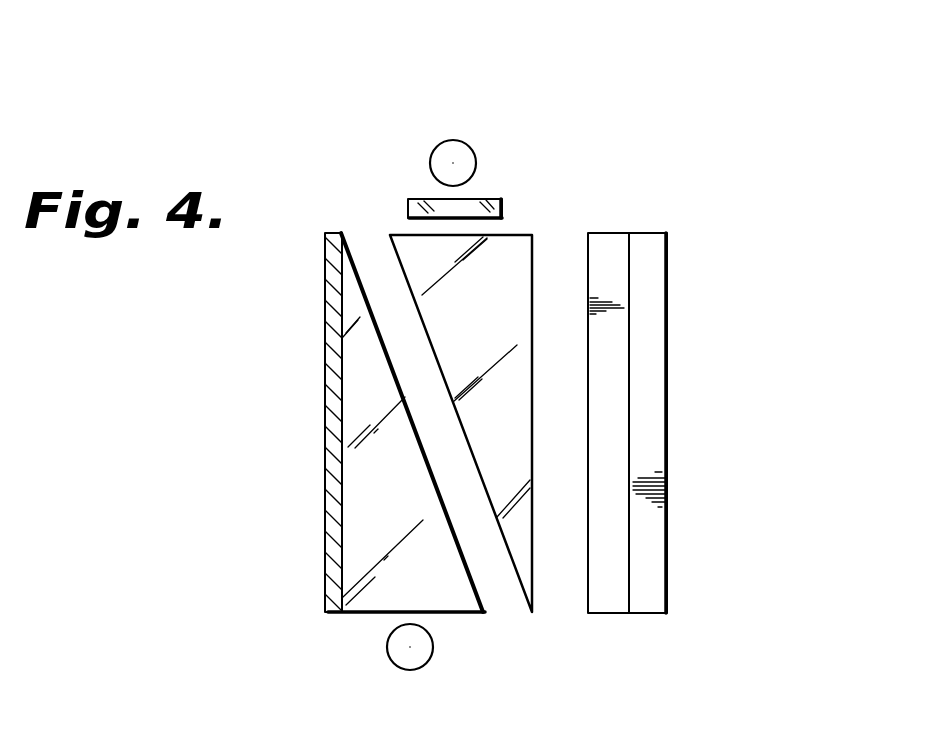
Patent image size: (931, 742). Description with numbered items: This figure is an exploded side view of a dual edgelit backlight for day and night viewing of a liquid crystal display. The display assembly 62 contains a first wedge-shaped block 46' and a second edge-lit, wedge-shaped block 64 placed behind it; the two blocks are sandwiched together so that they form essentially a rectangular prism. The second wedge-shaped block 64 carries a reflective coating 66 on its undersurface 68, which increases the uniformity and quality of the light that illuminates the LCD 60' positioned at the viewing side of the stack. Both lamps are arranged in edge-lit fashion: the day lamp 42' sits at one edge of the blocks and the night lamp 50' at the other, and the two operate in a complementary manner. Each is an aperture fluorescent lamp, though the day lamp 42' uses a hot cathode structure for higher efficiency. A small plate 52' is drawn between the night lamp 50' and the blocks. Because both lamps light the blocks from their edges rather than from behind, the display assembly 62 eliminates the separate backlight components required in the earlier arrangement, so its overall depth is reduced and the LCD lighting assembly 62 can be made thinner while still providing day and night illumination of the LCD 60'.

The display assembly 62 is at (748, 121).
The night lamp 50' is at (520, 152).
The filter plate 52' is at (406, 168).
The first wedge-shaped block 46' is at (555, 381).
The reflective coating 66 is at (325, 291).
The undersurface 68 is at (345, 422).
The second wedge-shaped block 64 is at (377, 563).
The LCD 60' is at (705, 423).
The day lamp 42' is at (494, 652).